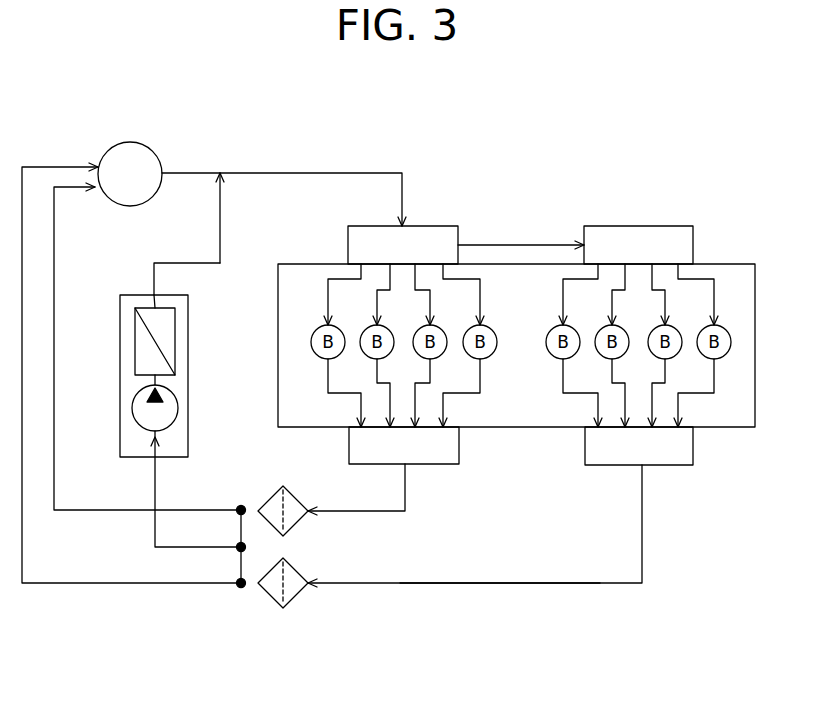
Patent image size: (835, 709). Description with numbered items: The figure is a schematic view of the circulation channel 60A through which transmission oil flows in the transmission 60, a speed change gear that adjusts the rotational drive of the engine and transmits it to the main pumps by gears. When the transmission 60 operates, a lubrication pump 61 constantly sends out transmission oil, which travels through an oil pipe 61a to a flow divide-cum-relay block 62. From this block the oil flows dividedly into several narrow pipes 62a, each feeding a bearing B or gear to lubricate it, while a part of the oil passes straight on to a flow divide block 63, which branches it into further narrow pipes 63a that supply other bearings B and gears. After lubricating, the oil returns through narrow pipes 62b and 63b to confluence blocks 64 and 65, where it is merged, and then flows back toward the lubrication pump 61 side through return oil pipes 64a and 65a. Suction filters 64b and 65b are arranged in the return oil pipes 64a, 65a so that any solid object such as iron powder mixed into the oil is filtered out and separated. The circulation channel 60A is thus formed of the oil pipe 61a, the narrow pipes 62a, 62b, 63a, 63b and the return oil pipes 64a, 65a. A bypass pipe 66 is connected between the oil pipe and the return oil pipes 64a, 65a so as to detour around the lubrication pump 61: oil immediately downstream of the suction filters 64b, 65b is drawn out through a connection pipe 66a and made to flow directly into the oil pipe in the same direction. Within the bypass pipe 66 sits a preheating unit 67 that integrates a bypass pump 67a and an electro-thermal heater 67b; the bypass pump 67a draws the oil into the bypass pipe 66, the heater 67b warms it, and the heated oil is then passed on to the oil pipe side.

The transmission 60 is at (738, 264).
The circulation channel 60A is at (618, 588).
The lubrication pump 61 is at (135, 152).
The oil pipe 61a is at (299, 173).
The flow divide-cum-relay block 62 is at (434, 226).
The narrow pipes 62a is at (377, 300).
The narrow pipes 62b is at (377, 375).
The flow divide block 63 is at (633, 226).
The narrow pipes 63a is at (666, 296).
The narrow pipes 63b is at (667, 372).
The confluence block 64 is at (438, 453).
The return oil pipe 64a is at (410, 503).
The suction filter 64b is at (293, 497).
The confluence block 65 is at (673, 457).
The return oil pipe 65a is at (495, 587).
The suction filter 65b is at (297, 597).
The bypass pipe 66 is at (155, 492).
The connection pipe 66a is at (240, 565).
The preheating unit 67 is at (139, 295).
The bypass pump 67a is at (133, 407).
The heater 67b is at (135, 320).